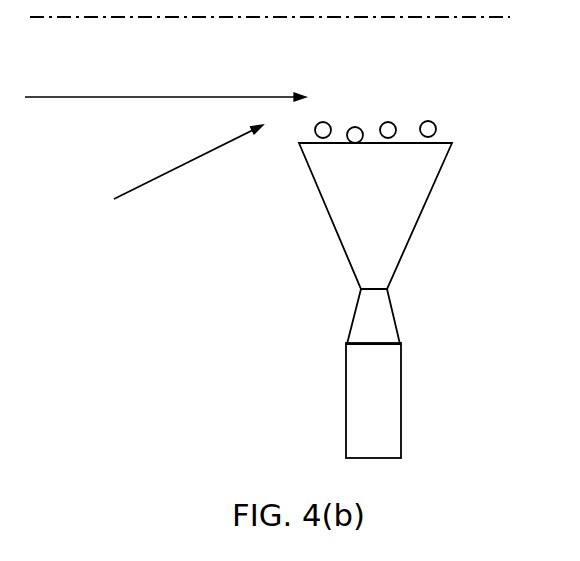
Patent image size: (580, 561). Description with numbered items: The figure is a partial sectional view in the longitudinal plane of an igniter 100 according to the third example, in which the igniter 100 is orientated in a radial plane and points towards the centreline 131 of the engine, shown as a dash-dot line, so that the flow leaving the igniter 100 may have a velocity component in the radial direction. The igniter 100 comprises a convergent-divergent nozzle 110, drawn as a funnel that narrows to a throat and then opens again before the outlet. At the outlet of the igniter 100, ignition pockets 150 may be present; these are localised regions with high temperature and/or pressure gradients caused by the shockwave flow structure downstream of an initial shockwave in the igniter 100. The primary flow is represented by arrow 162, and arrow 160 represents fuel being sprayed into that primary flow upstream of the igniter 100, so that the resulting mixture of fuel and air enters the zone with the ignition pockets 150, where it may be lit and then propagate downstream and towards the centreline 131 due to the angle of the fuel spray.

The igniter 100 is at (424, 300).
The convergent-divergent nozzle 110 is at (382, 262).
The centreline 131 is at (487, 20).
The ignition pockets 150 is at (433, 123).
The arrow 160 is at (120, 197).
The arrow 162 is at (60, 97).